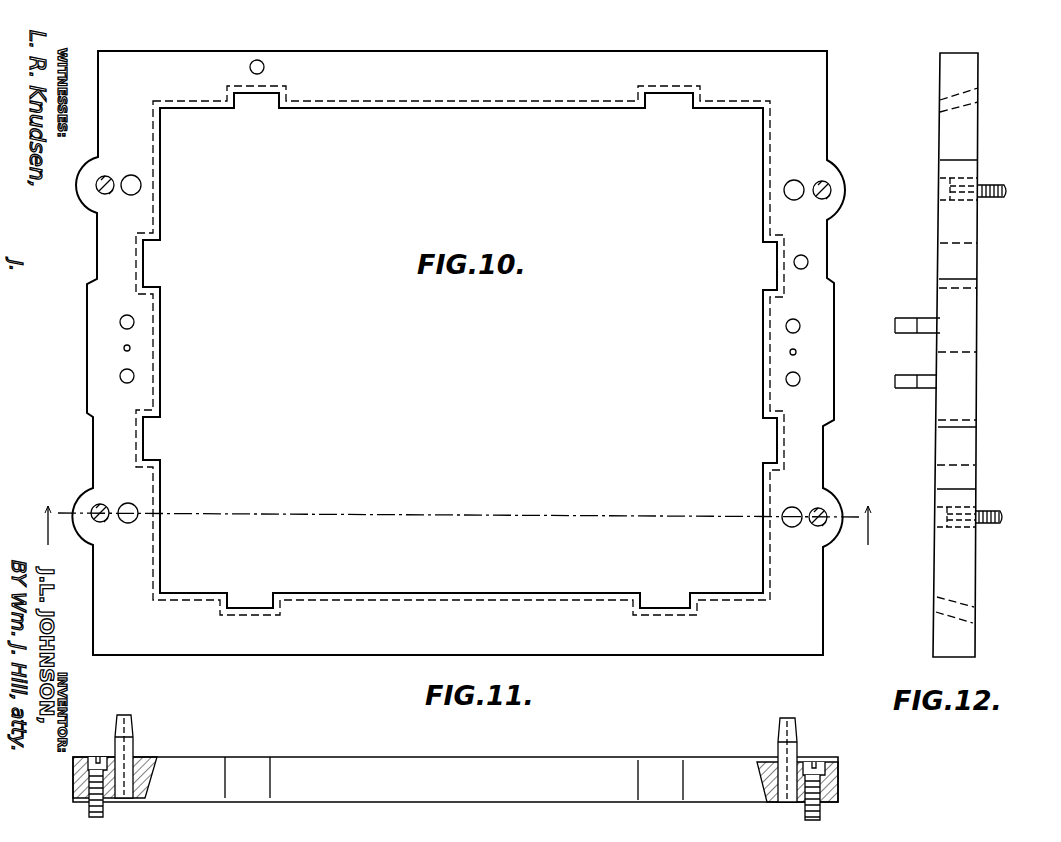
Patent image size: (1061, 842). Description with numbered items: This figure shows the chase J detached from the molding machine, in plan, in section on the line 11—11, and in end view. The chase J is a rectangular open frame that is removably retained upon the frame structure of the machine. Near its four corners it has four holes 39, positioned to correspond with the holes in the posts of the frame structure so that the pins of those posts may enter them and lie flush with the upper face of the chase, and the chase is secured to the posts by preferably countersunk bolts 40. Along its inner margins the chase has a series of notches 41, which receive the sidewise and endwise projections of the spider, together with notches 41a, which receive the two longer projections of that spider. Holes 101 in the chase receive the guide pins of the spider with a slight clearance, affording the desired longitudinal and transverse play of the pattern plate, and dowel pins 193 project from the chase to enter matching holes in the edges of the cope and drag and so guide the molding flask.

In FIG. 10, the chase J is at (458, 353).
In FIG. 11, the chase J is at (455, 767).
In FIG. 12, the chase J is at (934, 291).
In FIG. 10, the section line 11— 11 is at (461, 525).
In FIG. 10, the holes 39 is at (144, 185).
In FIG. 10, the countersunk bolts 40 is at (97, 197).
In FIG. 11, the countersunk bolts 40 is at (106, 814).
In FIG. 12, the countersunk bolts 40 is at (1010, 540).
In FIG. 10, the notches 41 is at (665, 112).
In FIG. 11, the notches 41 is at (660, 780).
In FIG. 10, the notches 41a is at (505, 191).
In FIG. 11, the notches 41a is at (247, 777).
In FIG. 10, the holes 101 is at (260, 58).
In FIG. 10, the dowel pins 193 is at (137, 377).
In FIG. 11, the dowel pins 193 is at (150, 712).
In FIG. 12, the dowel pins 193 is at (903, 336).